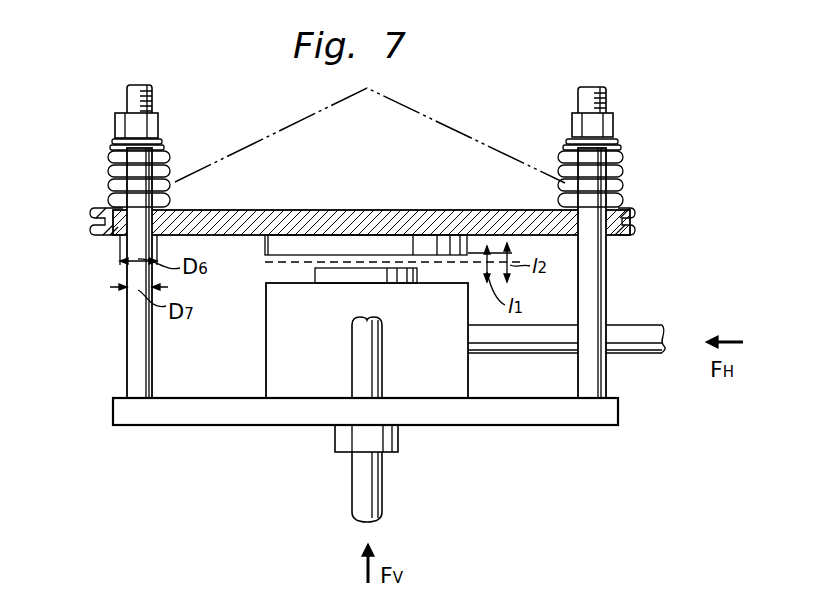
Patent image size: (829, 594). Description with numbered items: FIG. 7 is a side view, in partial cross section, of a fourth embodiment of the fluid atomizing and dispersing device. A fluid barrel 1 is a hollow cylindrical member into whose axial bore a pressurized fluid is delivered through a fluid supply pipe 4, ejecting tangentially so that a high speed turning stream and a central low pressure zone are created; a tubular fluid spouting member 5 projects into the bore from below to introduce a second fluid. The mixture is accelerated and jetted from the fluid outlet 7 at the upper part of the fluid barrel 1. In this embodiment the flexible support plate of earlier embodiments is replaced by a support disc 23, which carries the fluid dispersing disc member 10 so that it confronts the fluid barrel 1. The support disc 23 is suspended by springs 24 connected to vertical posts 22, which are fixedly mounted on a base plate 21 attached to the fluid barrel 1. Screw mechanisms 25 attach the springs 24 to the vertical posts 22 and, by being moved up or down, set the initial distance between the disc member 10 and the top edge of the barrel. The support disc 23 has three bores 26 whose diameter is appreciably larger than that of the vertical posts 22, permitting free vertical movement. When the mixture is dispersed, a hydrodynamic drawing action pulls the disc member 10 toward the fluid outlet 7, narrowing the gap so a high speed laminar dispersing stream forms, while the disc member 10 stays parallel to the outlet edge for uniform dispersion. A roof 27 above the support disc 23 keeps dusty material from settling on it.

The fluid barrel 1 is at (445, 372).
The fluid supply pipe 4 is at (533, 342).
The tubular fluid spouting member 5 is at (370, 497).
The fluid outlet 7 is at (393, 268).
The fluid dispersing disc member 10 is at (329, 243).
The base plate 21 is at (607, 415).
The vertical posts 22 is at (130, 360).
The support disc 23 is at (556, 220).
The springs 24 is at (110, 165).
The screw mechanisms 25 is at (115, 143).
The bores 26 is at (106, 234).
The roof 27 is at (397, 101).